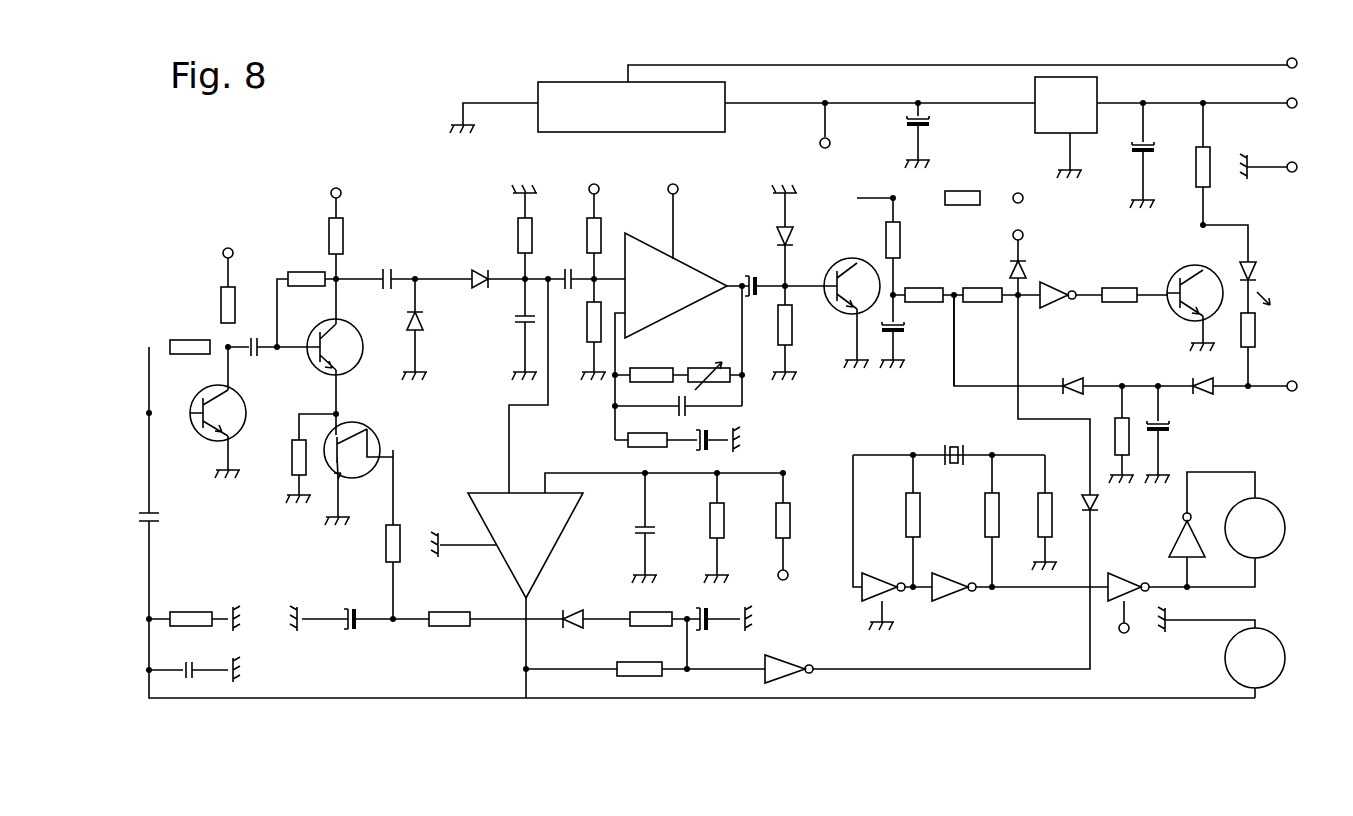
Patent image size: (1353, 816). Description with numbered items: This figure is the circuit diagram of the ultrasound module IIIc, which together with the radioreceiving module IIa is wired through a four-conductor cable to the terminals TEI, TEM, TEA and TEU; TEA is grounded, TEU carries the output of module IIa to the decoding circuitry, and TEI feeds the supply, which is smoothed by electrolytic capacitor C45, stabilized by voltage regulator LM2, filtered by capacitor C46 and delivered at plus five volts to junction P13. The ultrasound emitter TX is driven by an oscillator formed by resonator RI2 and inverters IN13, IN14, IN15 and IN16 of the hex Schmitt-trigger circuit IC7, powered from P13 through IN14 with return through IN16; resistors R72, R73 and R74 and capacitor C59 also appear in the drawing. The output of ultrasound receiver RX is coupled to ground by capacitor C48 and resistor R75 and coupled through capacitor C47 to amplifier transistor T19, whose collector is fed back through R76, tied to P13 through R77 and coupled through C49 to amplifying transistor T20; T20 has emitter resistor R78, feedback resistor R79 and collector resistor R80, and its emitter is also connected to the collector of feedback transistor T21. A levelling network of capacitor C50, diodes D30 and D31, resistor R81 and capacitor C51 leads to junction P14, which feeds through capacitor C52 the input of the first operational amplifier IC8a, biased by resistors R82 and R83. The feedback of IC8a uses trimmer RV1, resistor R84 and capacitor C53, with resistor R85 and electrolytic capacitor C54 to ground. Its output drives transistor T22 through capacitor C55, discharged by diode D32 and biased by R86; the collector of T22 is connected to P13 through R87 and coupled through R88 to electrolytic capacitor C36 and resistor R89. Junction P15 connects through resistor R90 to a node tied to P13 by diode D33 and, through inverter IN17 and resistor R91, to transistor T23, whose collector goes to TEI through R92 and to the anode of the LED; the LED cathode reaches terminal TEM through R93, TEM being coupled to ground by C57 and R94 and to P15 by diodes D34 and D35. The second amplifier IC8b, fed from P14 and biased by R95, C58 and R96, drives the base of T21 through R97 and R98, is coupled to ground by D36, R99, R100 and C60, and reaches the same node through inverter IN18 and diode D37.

The radioreceiving module IIa is at (631, 107).
The ultrasound module IIIc is at (249, 199).
The voltage regulator LM2 is at (1020, 127).
The terminal TEU is at (1297, 63).
The terminal TEI is at (1297, 103).
The terminal TEA is at (1297, 167).
The terminal TEM is at (1297, 386).
The junction P13 is at (825, 103).
The junction P14 is at (520, 290).
The junction P15 is at (954, 292).
The resistor R72 is at (1040, 515).
The resistor R73 is at (985, 515).
The resistor R74 is at (906, 515).
The resistor R75 is at (186, 611).
The resistor R76 is at (192, 336).
The resistor R77 is at (221, 302).
The resistor R78 is at (292, 453).
The resistor R79 is at (315, 269).
The resistor R80 is at (343, 234).
The resistor R81 is at (518, 235).
The resistor R82 is at (587, 235).
The resistor R83 is at (587, 328).
The resistor R84 is at (662, 368).
The resistor R85 is at (658, 434).
The resistor R86 is at (792, 333).
The resistor R87 is at (960, 192).
The resistor R88 is at (900, 243).
The resistor R89 is at (940, 287).
The resistor R90 is at (982, 303).
The resistor R91 is at (1120, 288).
The resistor R92 is at (1196, 173).
The resistor R93 is at (1256, 330).
The resistor R94 is at (1115, 427).
The resistor R95 is at (710, 521).
The resistor R96 is at (776, 521).
The resistor R97 is at (450, 628).
The resistor R98 is at (386, 545).
The resistor R99 is at (657, 628).
The resistor R100 is at (645, 676).
The trimmer RV1 is at (710, 363).
The resonator RI2 is at (944, 444).
The electrolytic capacitor C36 is at (897, 336).
The electrolytic capacitor C45 is at (1135, 154).
The electrolytic capacitor C46 is at (922, 128).
The coupling capacitor C47 is at (153, 511).
The capacitor C48 is at (182, 665).
The coupling capacitor C49 is at (250, 363).
The coupling capacitor C50 is at (392, 267).
The capacitor C51 is at (516, 325).
The capacitor C52 is at (563, 270).
The capacitor C53 is at (676, 404).
The electrolytic capacitor C54 is at (710, 438).
The capacitor C55 is at (747, 272).
The electrolytic capacitor C57 is at (1172, 427).
The capacitor C58 is at (634, 534).
The capacitor C59 is at (345, 609).
The electrolytic capacitor C60 is at (704, 632).
The diode D30 is at (423, 322).
The diode D31 is at (480, 267).
The diode D32 is at (776, 235).
The diode D33 is at (1028, 266).
The diode D34 is at (1208, 377).
The diode D35 is at (1074, 377).
The diode D36 is at (581, 610).
The diode D37 is at (1098, 503).
The light-emitting diode LED is at (1258, 268).
The amplifier transistor T19 is at (200, 393).
The amplifying transistor T20 is at (350, 366).
The feedback transistor T21 is at (370, 428).
The transistor T22 is at (840, 264).
The transistor T23 is at (1178, 268).
The operational amplifier unit IC8a is at (676, 285).
The operational amplifier unit IC8b is at (525, 545).
The integrated circuit IC7 is at (1105, 616).
The inverter IN13 is at (1173, 540).
The inverter IN14 is at (1134, 570).
The inverter IN15 is at (959, 570).
The inverter IN16 is at (891, 570).
The inverter IN17 is at (1052, 305).
The inverter IN18 is at (785, 665).
The ultrasound emitter TX is at (1255, 528).
The ultrasound receiver RX is at (1255, 658).